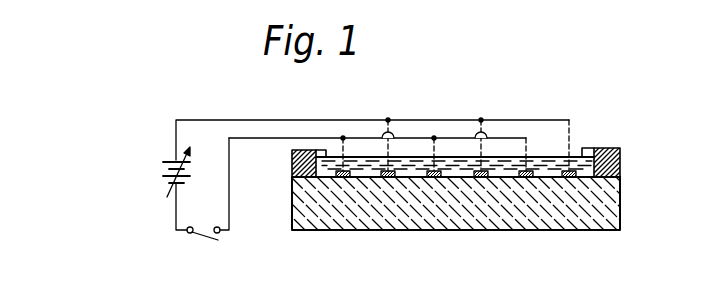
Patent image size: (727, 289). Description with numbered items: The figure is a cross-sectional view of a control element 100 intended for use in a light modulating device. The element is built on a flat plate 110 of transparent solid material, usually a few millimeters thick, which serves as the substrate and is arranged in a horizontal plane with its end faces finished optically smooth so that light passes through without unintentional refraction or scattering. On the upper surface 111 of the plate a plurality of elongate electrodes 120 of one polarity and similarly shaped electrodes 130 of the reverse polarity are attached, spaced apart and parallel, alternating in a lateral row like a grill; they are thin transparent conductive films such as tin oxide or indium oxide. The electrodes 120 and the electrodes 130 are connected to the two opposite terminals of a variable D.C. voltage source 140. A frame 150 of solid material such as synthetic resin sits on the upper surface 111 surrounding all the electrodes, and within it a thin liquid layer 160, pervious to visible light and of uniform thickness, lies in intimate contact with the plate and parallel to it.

The control element 100 is at (468, 174).
The flat plate 110 is at (582, 218).
The upper surface 111 is at (553, 162).
The electrodes 120 is at (531, 170).
The electrodes 130 is at (587, 170).
The D.C. voltage source 140 is at (160, 172).
The frame 150 is at (619, 167).
The liquid layer 160 is at (455, 170).